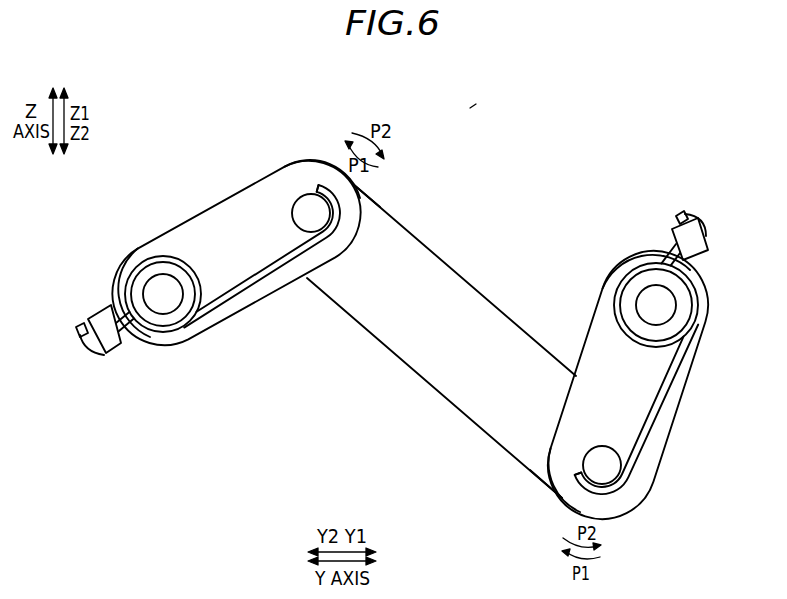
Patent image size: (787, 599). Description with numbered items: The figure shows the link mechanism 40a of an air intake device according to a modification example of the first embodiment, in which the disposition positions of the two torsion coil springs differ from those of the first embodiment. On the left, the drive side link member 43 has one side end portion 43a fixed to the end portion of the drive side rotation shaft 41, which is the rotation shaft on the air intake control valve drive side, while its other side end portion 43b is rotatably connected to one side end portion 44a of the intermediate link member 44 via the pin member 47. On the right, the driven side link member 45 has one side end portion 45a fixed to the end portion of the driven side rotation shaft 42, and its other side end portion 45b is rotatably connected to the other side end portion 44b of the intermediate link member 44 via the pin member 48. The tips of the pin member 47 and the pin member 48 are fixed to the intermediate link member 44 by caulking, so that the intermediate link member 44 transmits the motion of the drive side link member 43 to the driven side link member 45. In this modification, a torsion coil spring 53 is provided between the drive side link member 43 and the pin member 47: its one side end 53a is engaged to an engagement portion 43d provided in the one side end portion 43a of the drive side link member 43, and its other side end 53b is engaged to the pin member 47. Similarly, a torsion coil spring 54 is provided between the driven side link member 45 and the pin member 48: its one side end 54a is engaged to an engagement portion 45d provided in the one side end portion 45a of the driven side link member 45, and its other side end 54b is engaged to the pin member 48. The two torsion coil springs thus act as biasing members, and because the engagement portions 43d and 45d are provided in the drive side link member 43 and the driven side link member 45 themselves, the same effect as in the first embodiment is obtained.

The link mechanism 40a is at (477, 103).
The drive side rotation shaft 41 is at (163, 300).
The driven side rotation shaft 42 is at (656, 303).
The drive side link member 43 is at (213, 220).
The one side end portion of drive side link member 43a is at (140, 334).
The other side end portion of drive side link member 43b is at (320, 172).
The engagement portion 43d is at (97, 322).
The intermediate link member 44 is at (497, 300).
The one side end portion of intermediate link member 44a is at (368, 212).
The other side end portion of intermediate link member 44b is at (538, 460).
The driven side link member 45 is at (706, 302).
The one side end portion of driven side link member 45a is at (653, 262).
The other side end portion of driven side link member 45b is at (558, 474).
The engagement portion 45d is at (709, 243).
The pin member 47 is at (310, 195).
The pin member 48 is at (605, 473).
The torsion coil spring 53 is at (273, 272).
The one side end of torsion coil spring 53a is at (82, 333).
The other side end of torsion coil spring 53b is at (337, 205).
The torsion coil spring 54 is at (662, 400).
The one side end of torsion coil spring 54a is at (681, 216).
The other side end of torsion coil spring 54b is at (585, 480).